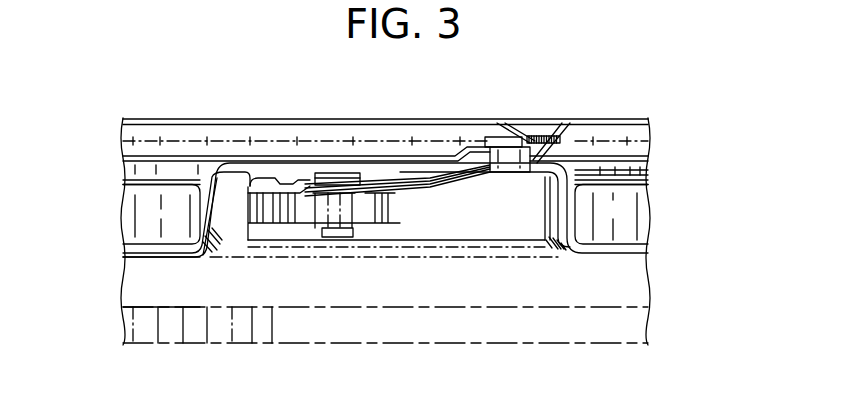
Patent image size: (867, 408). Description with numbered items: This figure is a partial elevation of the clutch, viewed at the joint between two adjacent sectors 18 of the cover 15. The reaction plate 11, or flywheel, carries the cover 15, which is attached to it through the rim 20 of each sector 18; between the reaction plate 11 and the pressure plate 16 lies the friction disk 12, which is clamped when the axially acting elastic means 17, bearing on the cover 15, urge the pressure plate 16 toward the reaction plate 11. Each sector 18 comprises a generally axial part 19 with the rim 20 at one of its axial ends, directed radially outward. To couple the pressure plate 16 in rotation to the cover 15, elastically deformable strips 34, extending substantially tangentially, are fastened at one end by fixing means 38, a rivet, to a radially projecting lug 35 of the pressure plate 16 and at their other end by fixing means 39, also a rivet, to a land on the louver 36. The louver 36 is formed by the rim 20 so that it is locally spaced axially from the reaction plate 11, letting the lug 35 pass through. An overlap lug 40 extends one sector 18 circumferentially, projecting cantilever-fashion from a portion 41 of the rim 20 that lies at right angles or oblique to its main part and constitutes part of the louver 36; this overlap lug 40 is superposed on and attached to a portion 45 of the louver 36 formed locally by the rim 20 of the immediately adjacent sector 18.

The reaction plate 11 is at (141, 348).
The friction disk 12 is at (238, 262).
The cover 15 is at (660, 148).
The pressure plate 16 is at (266, 176).
The axially acting elastic means 17 is at (549, 138).
The sector 18 is at (465, 116).
The axial part 19 is at (170, 216).
The rim 20 is at (138, 262).
The elastically deformable strips 34 is at (452, 182).
The radially projecting lug 35 is at (309, 220).
The louver 36 is at (228, 212).
The fixing means 38 is at (341, 175).
The fixing means 39 is at (494, 138).
The overlap lug 40 is at (523, 168).
The portion of the rim 41 is at (573, 208).
The portion of the louver 45 is at (524, 148).